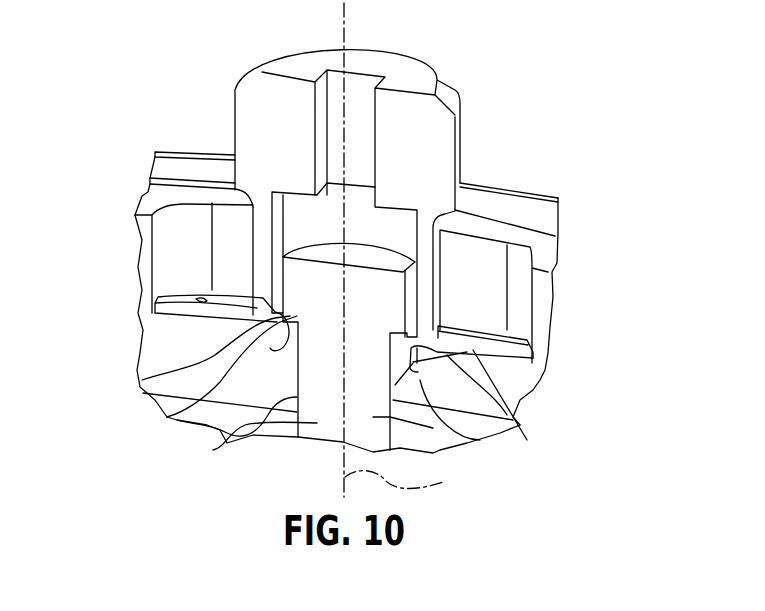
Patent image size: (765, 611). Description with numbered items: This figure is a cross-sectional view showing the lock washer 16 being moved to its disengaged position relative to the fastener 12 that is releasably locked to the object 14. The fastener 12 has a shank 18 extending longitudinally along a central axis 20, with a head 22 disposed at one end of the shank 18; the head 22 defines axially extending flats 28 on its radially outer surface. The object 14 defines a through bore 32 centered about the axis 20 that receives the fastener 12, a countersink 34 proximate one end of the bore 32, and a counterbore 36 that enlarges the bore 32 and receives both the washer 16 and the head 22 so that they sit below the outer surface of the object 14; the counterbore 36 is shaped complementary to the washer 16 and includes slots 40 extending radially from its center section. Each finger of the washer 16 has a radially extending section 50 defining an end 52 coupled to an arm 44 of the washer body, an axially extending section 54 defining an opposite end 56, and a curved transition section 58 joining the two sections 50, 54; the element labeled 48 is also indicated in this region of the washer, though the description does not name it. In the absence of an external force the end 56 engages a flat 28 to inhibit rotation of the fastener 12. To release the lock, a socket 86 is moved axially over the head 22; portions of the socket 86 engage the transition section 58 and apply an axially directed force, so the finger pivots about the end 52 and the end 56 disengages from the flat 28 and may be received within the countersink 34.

The fastener 12 is at (300, 433).
The object 14 is at (175, 344).
The lock washer 16 is at (178, 258).
The shank 18 is at (400, 400).
The central axis 20 is at (409, 483).
The head 22 is at (383, 290).
The flats 28 is at (407, 305).
The through bore 32 is at (213, 450).
The countersink 34 is at (177, 420).
The counterbore 36 is at (480, 256).
The slots 40 is at (220, 226).
The arm 44 is at (182, 303).
The seal lip 48 is at (142, 384).
The radially extending section 50 is at (470, 348).
The end 52 is at (495, 338).
The axially extending section 54 is at (527, 440).
The end 56 is at (419, 377).
The curved transition section 58 is at (507, 415).
The socket 86 is at (427, 142).